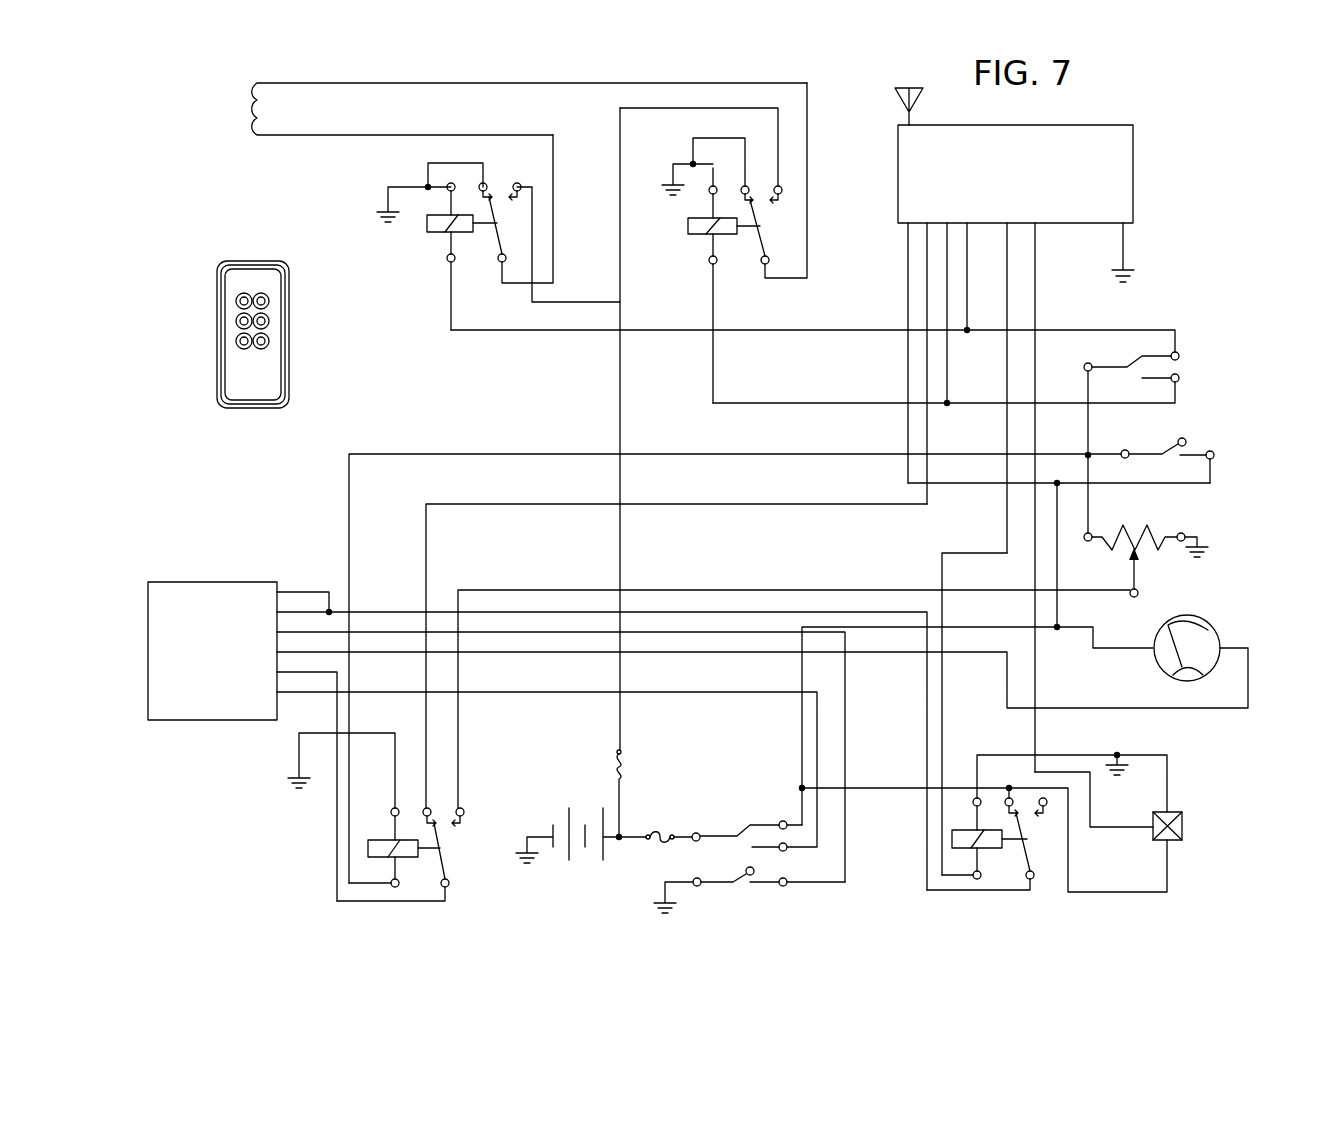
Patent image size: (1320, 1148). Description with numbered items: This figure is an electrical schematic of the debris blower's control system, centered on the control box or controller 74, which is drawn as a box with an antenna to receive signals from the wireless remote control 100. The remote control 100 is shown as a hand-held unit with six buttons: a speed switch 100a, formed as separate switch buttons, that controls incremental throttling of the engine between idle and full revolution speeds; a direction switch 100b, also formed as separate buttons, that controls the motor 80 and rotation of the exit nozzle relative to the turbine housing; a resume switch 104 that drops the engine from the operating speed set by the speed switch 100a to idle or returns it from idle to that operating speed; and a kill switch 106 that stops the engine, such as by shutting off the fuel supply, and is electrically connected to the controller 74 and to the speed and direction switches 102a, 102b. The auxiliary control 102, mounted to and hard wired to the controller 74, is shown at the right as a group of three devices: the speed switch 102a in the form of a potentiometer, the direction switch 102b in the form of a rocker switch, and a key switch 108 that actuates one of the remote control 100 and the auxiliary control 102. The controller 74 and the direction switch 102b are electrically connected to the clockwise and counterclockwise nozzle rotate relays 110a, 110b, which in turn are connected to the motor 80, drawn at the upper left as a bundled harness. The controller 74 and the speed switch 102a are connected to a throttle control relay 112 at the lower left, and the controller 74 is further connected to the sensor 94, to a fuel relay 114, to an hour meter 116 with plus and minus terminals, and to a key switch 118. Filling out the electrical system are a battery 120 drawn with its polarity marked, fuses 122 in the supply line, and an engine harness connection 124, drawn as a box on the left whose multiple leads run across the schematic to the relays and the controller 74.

The control box 74 is at (1133, 165).
The motor 80 is at (250, 108).
The sensor 94 is at (1182, 820).
The wireless remote control 100 is at (260, 305).
The speed switch 100a is at (270, 321).
The direction switch 100b is at (270, 298).
The auxiliary control 102 is at (1190, 315).
The speed switch 102a is at (1153, 530).
The direction switch 102b is at (1180, 368).
The resume switch 104 is at (238, 342).
The kill switch 106 is at (268, 344).
The key switch 108 is at (1199, 449).
The clockwise nozzle rotate relay 110a is at (695, 238).
The counterclockwise nozzle rotate relay 110b is at (435, 240).
The throttle control relay 112 is at (328, 830).
The fuel relay 114 is at (982, 893).
The hour meter 116 is at (1208, 620).
The key switch 118 is at (725, 888).
The battery 120 is at (590, 810).
The fuses 122 is at (668, 830).
The engine harness connection 124 is at (210, 582).